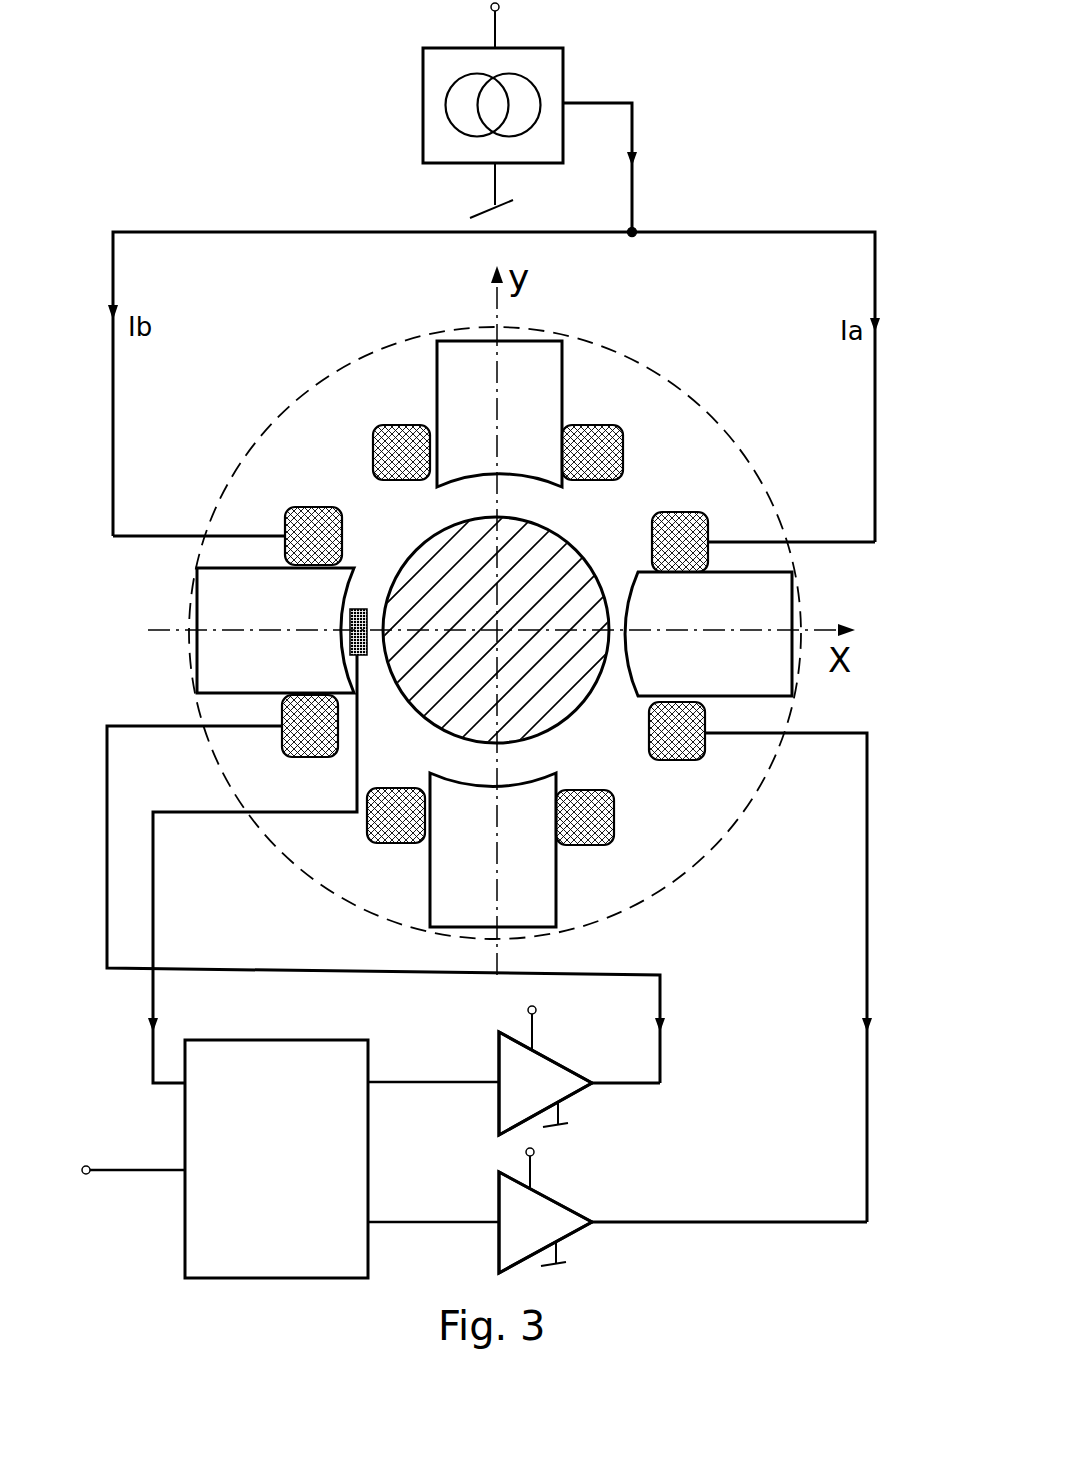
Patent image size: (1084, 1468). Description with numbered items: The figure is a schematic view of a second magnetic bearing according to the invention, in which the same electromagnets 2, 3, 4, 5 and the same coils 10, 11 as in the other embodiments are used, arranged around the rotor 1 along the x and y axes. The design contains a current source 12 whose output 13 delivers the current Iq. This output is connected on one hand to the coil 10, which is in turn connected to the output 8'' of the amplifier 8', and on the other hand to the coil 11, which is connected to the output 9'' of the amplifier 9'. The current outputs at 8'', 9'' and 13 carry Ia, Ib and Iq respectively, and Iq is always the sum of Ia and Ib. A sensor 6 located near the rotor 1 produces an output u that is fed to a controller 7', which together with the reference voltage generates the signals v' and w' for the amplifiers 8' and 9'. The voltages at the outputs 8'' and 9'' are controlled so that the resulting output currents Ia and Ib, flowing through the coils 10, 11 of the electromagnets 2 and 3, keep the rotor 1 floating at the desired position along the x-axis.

The rotor 1 is at (540, 540).
The electromagnet 2 is at (708, 666).
The electromagnet 3 is at (275, 662).
The electromagnet 4 is at (498, 414).
The electromagnet 5 is at (490, 850).
The sensor 6 is at (362, 655).
The controller 7' is at (290, 1143).
The amplifier 8' is at (683, 1210).
The output of amplifier 8' 8'' is at (579, 1224).
The amplifier 9' is at (579, 1070).
The output of amplifier 9' 9'' is at (580, 1083).
The coil 10 is at (703, 520).
The coil 11 is at (317, 530).
The current source 12 is at (438, 80).
The current output 13 is at (565, 102).